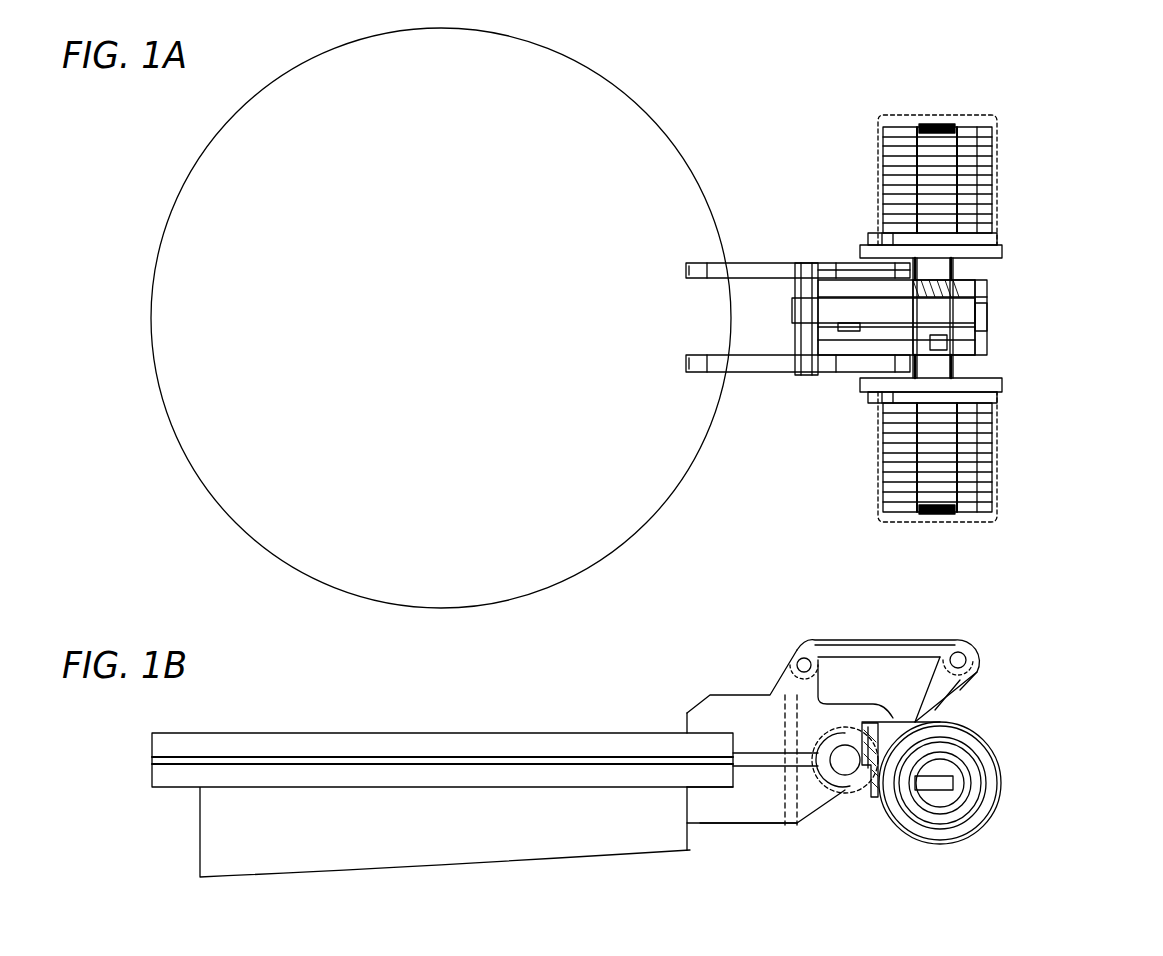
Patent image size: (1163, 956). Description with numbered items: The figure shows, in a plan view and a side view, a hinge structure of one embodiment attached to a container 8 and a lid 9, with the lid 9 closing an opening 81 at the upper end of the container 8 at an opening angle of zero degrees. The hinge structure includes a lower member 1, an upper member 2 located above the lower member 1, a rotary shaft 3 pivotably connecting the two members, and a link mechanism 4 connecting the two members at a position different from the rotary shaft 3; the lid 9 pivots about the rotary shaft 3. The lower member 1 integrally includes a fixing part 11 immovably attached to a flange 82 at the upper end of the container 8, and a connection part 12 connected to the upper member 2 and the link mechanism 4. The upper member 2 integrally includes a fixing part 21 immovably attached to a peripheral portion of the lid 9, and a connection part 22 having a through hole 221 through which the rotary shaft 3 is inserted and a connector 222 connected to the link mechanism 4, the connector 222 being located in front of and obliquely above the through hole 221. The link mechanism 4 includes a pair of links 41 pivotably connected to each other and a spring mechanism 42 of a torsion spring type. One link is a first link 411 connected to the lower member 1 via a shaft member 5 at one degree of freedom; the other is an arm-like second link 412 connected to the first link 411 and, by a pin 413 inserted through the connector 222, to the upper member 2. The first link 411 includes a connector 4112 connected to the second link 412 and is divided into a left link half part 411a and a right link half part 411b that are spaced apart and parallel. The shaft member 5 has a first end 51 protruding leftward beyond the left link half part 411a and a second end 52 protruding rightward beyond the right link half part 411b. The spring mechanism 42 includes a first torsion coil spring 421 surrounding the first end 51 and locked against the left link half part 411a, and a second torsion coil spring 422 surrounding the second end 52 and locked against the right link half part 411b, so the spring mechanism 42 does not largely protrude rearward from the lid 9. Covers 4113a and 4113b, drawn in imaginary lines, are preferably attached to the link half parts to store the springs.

In FIG. 1B, the lower member 1 is at (808, 808).
In FIG. 1B, the fixing part 11 is at (758, 808).
In FIG. 1B, the connection part 12 is at (874, 790).
In FIG. 1A, the upper member 2 is at (748, 268).
In FIG. 1B, the upper member 2 is at (727, 713).
In FIG. 1A, the fixing part 21 is at (697, 265).
In FIG. 1A, the connection part 22 is at (823, 268).
In FIG. 1B, the through hole 221 is at (846, 792).
In FIG. 1B, the connector 222 is at (793, 688).
In FIG. 1A, the rotary shaft 3 is at (848, 327).
In FIG. 1B, the rotary shaft 3 is at (856, 768).
In FIG. 1A, the link mechanism 4 is at (987, 305).
In FIG. 1B, the link mechanism 4 is at (975, 656).
In FIG. 1A, the links 41 is at (1000, 250).
In FIG. 1B, the links 41 is at (881, 640).
In FIG. 1A, the first link 411 is at (1000, 385).
In FIG. 1B, the first link 411 is at (968, 707).
In FIG. 1A, the left link half part 411a is at (866, 392).
In FIG. 1A, the right link half part 411b is at (874, 233).
In FIG. 1B, the connector 4112 is at (965, 686).
In FIG. 1A, the cover 4113a is at (1000, 486).
In FIG. 1A, the cover 4113b is at (1000, 163).
In FIG. 1A, the second link 412 is at (985, 283).
In FIG. 1B, the second link 412 is at (961, 648).
In FIG. 1A, the pin 413 is at (803, 265).
In FIG. 1B, the pin 413 is at (801, 652).
In FIG. 1A, the spring mechanism 42 is at (1013, 407).
In FIG. 1B, the spring mechanism 42 is at (1015, 768).
In FIG. 1A, the first torsion coil spring 421 is at (880, 467).
In FIG. 1B, the first torsion coil spring 421 is at (985, 822).
In FIG. 1A, the second torsion coil spring 422 is at (882, 160).
In FIG. 1A, the shaft member 5 is at (987, 330).
In FIG. 1B, the shaft member 5 is at (941, 800).
In FIG. 1A, the first end 51 is at (1000, 449).
In FIG. 1A, the second end 52 is at (998, 140).
In FIG. 1B, the container 8 is at (208, 840).
In FIG. 1B, the opening 81 is at (435, 758).
In FIG. 1B, the flange 82 is at (707, 792).
In FIG. 1A, the lid 9 is at (190, 215).
In FIG. 1B, the lid 9 is at (302, 745).